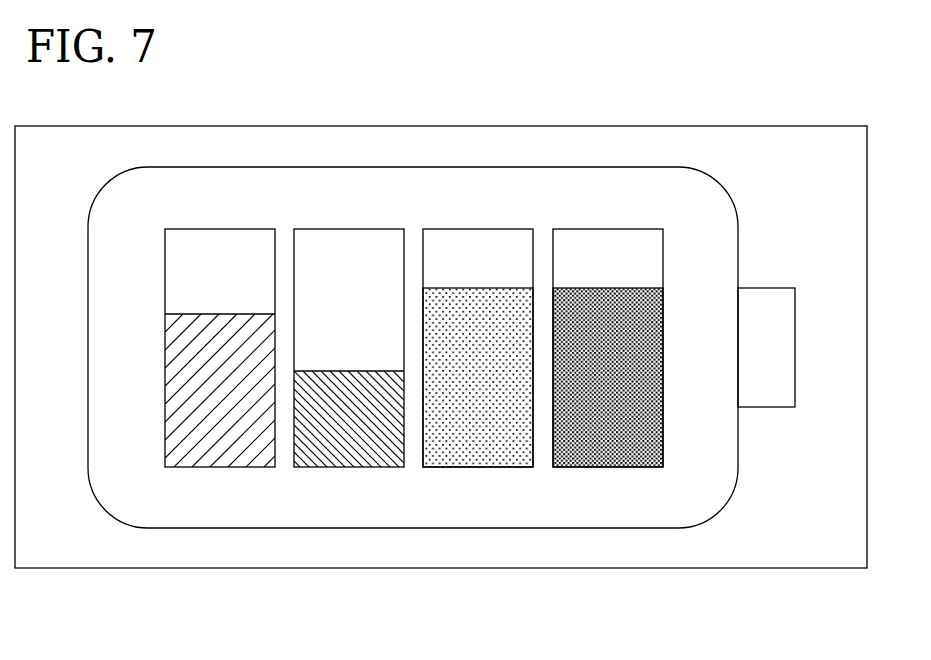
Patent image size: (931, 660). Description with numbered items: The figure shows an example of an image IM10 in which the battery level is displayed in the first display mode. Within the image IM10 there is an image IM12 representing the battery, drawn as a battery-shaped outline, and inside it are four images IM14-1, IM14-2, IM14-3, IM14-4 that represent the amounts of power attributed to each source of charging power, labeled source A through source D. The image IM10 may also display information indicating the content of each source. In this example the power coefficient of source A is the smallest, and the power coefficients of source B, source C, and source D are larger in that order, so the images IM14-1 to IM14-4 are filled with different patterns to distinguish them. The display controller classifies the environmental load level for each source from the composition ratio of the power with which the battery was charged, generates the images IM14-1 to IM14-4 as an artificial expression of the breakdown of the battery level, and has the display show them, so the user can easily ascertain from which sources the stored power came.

The image IM10 is at (792, 126).
The image representing the battery IM12 is at (733, 202).
The image representing amount of power for source A IM14-1 is at (222, 467).
The image representing amount of power for source B IM14-2 is at (350, 467).
The image representing amount of power for source C IM14-3 is at (480, 467).
The image representing amount of power for source D IM14-4 is at (610, 467).